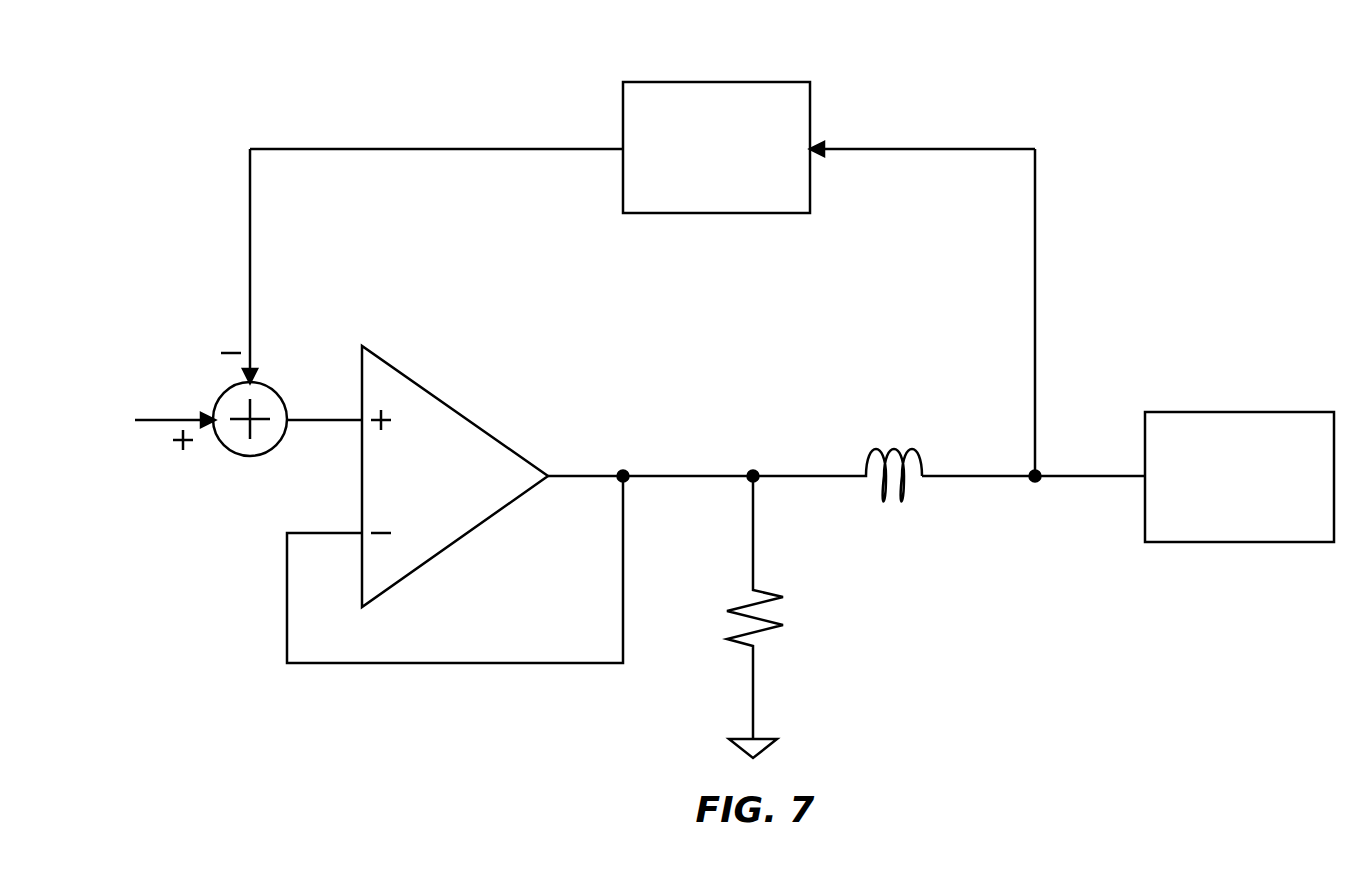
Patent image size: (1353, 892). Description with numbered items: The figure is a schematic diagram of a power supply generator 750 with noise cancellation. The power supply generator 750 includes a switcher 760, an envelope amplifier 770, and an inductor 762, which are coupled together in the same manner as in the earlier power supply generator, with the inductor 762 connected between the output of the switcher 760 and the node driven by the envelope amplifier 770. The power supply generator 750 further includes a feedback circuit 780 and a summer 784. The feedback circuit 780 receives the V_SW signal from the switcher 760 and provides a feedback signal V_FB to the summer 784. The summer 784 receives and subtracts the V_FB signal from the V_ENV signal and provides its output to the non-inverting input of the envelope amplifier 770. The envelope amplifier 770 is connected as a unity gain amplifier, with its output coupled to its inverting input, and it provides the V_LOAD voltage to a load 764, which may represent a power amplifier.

The power supply generator 750 is at (1248, 150).
The switcher 760 is at (1236, 412).
The inductor 762 is at (896, 447).
The load 764 is at (770, 590).
The envelope amplifier 770 is at (449, 405).
The feedback circuit 780 is at (713, 82).
The summer 784 is at (283, 397).